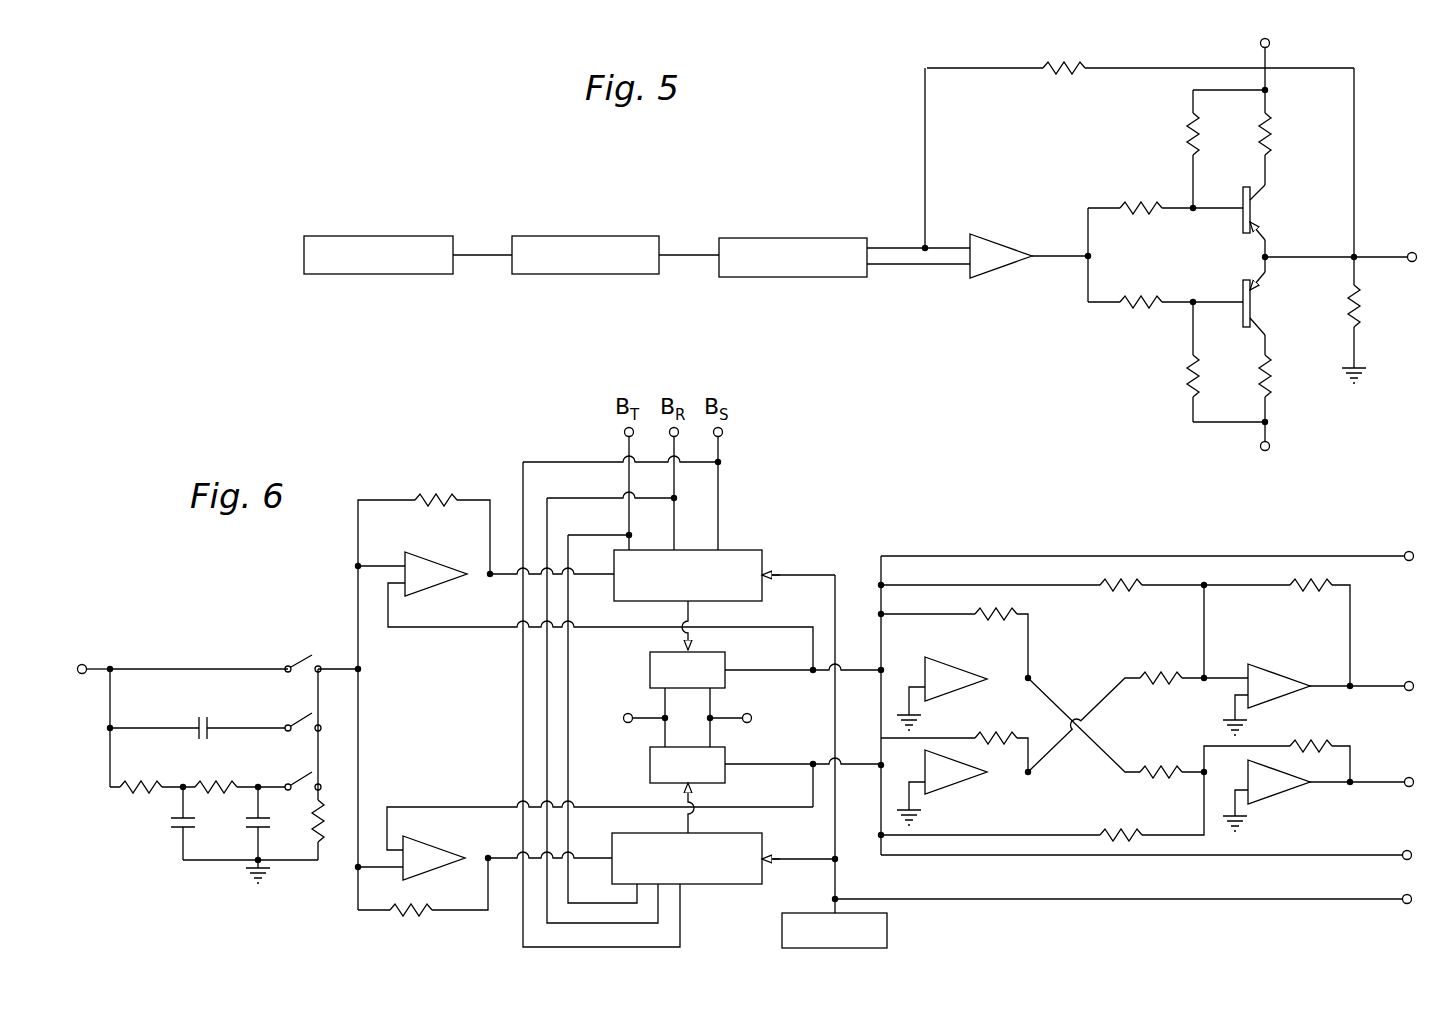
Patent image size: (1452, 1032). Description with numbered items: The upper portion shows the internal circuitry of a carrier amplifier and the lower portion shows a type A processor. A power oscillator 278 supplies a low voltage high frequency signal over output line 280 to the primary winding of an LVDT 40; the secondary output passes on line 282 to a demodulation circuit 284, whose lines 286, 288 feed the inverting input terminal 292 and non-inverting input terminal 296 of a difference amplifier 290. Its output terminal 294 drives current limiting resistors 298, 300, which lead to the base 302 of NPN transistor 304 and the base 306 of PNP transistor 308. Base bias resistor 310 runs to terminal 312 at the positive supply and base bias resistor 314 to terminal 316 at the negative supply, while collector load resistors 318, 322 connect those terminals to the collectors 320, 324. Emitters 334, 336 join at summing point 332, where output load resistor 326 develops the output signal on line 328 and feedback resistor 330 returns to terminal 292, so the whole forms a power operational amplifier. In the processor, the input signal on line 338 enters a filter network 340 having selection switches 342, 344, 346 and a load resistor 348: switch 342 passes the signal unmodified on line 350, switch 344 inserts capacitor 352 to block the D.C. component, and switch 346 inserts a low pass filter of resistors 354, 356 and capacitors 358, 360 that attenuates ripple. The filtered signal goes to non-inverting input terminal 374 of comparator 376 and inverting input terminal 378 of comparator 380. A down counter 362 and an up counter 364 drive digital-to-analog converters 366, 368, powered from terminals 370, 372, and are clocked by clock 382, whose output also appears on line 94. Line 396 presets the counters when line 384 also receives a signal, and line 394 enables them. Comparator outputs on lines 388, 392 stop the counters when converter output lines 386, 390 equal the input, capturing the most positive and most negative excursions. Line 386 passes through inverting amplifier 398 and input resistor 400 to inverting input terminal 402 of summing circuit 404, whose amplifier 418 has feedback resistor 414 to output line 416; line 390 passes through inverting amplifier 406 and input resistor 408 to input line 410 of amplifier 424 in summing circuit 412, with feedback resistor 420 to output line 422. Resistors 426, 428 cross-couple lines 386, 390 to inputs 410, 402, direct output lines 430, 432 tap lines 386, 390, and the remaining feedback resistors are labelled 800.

In FIG. 5, the power oscillator 278 is at (379, 236).
In FIG. 5, the output line 280 is at (484, 255).
In FIG. 5, the LVDT 40 is at (590, 236).
In FIG. 5, the line 282 is at (696, 254).
In FIG. 5, the demodulation circuit 284 is at (783, 238).
In FIG. 5, the line 286 is at (887, 248).
In FIG. 5, the line 288 is at (906, 264).
In FIG. 5, the difference amplifier 290 is at (1008, 240).
In FIG. 5, the inverting input terminal 292 is at (946, 248).
In FIG. 5, the output terminal 294 is at (1038, 258).
In FIG. 5, the non-inverting input terminal 296 is at (966, 264).
In FIG. 5, the current limiting resistor 298 is at (1133, 208).
In FIG. 5, the current limiting resistor 300 is at (1128, 304).
In FIG. 5, the base 302 is at (1244, 204).
In FIG. 5, the NPN transistor 304 is at (1270, 212).
In FIG. 5, the base 306 is at (1243, 301).
In FIG. 5, the PNP transistor 308 is at (1266, 306).
In FIG. 5, the base bias resistor 310 is at (1190, 135).
In FIG. 5, the terminal 312 is at (1262, 54).
In FIG. 5, the base bias resistor 314 is at (1188, 373).
In FIG. 5, the terminal 316 is at (1260, 432).
In FIG. 5, the collector load resistor 318 is at (1262, 132).
In FIG. 5, the collector 320 is at (1256, 194).
In FIG. 5, the collector load resistor 322 is at (1270, 374).
In FIG. 5, the collector 324 is at (1256, 314).
In FIG. 5, the output load resistor 326 is at (1360, 299).
In FIG. 5, the output line 328 is at (1386, 257).
In FIG. 5, the feedback resistor 330 is at (1046, 64).
In FIG. 5, the summing point 332 is at (1262, 255).
In FIG. 5, the emitter 334 is at (1261, 228).
In FIG. 5, the emitter 336 is at (1258, 292).
In FIG. 6, the input line 338 is at (102, 669).
In FIG. 6, the filter network 340 is at (157, 632).
In FIG. 6, the selection switch 342 is at (308, 660).
In FIG. 6, the selection switch 344 is at (304, 722).
In FIG. 6, the selection switch 346 is at (300, 779).
In FIG. 6, the load resistor 348 is at (322, 846).
In FIG. 6, the line 350 is at (222, 669).
In FIG. 6, the capacitor 352 is at (203, 716).
In FIG. 6, the resistor 354 is at (133, 791).
In FIG. 6, the resistor 356 is at (216, 784).
In FIG. 6, the capacitor 358 is at (172, 823).
In FIG. 6, the capacitor 360 is at (248, 823).
In FIG. 6, the down counter 362 is at (748, 549).
In FIG. 6, the up counter 364 is at (706, 886).
In FIG. 6, the digital-to-analog converter 366 is at (650, 664).
In FIG. 6, the digital-to-analog converter 368 is at (650, 770).
In FIG. 6, the terminal 370 is at (744, 720).
In FIG. 6, the terminal 372 is at (642, 721).
In FIG. 6, the non-inverting input terminal 374 is at (393, 564).
In FIG. 6, the comparator 376 is at (450, 554).
In FIG. 6, the inverting input terminal 378 is at (394, 864).
In FIG. 6, the comparator 380 is at (444, 844).
In FIG. 6, the clock 382 is at (887, 930).
In FIG. 6, the line 384 is at (605, 535).
In FIG. 6, the output line 386 is at (796, 668).
In FIG. 6, the line 388 is at (496, 569).
In FIG. 6, the output line 390 is at (792, 766).
In FIG. 6, the line 392 is at (492, 862).
In FIG. 6, the line 394 is at (600, 498).
In FIG. 6, the line 396 is at (591, 462).
In FIG. 6, the inverting amplifier 398 is at (958, 662).
In FIG. 6, the input resistor 400 is at (1150, 771).
In FIG. 6, the inverting input terminal 402 is at (1236, 776).
In FIG. 6, the summing circuit 404 is at (1284, 798).
In FIG. 6, the inverting amplifier 406 is at (956, 789).
In FIG. 6, the input resistor 408 is at (1148, 677).
In FIG. 6, the input line 410 is at (1238, 677).
In FIG. 6, the summing circuit 412 is at (1305, 698).
In FIG. 6, the feedback resistor 414 is at (1312, 746).
In FIG. 6, the output line 416 is at (1376, 781).
In FIG. 6, the amplifier 418 is at (1292, 786).
In FIG. 6, the feedback resistor 420 is at (1302, 582).
In FIG. 6, the output line 422 is at (1376, 685).
In FIG. 6, the amplifier 424 is at (1291, 673).
In FIG. 6, the resistor 426 is at (1100, 584).
In FIG. 6, the resistor 428 is at (1114, 834).
In FIG. 6, the direct output line 430 is at (1004, 555).
In FIG. 6, the output line 432 is at (912, 856).
In FIG. 6, the feedback resistor 800 is at (430, 498).
In FIG. 6, the clock line 94 is at (1184, 900).